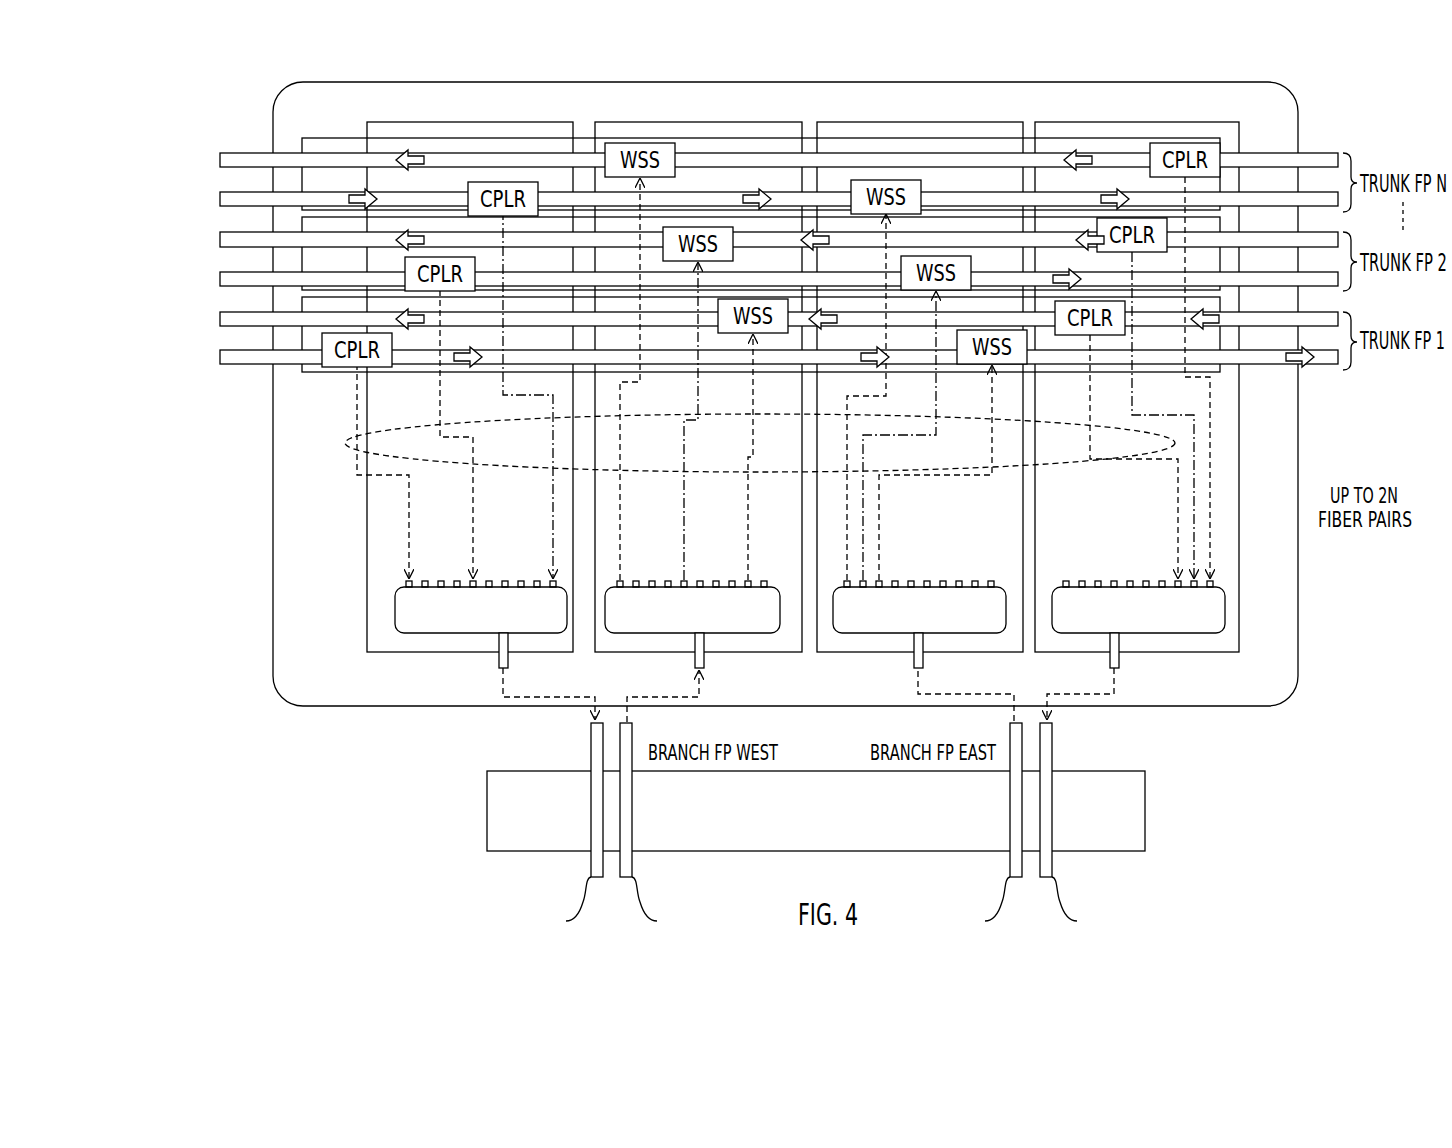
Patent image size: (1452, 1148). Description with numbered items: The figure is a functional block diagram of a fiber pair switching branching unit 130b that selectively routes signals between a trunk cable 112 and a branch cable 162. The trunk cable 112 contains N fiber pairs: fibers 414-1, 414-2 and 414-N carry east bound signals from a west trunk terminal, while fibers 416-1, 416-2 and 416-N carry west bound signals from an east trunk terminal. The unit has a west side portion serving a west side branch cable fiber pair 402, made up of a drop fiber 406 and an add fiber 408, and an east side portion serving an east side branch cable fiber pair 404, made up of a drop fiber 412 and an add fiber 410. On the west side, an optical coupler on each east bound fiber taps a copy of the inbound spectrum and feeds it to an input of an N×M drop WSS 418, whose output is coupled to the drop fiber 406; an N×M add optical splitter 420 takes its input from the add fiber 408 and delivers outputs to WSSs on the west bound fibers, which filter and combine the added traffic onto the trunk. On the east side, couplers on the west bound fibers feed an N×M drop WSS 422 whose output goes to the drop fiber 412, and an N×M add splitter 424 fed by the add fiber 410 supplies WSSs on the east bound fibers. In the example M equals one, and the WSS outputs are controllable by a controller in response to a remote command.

The trunk cable 112 is at (238, 124).
The branching unit 130b is at (280, 698).
The trunk fiber 416-N is at (218, 159).
The trunk fiber 414-N is at (218, 199).
The trunk fiber 416-2 is at (218, 239).
The trunk fiber 414-2 is at (218, 279).
The trunk fiber 416-1 is at (218, 319).
The trunk fiber 414-1 is at (218, 357).
The N×M drop WSS 418 is at (392, 608).
The N×M add optical splitter/coupler 420 is at (720, 638).
The N×M add optical splitter/coupler 424 is at (890, 638).
The N×M drop WSS 422 is at (1232, 628).
The branch cable 162 is at (1149, 815).
The west side branch cable fiber pair 402 is at (565, 829).
The east side branch cable fiber pair 404 is at (1087, 829).
The drop fiber 406 is at (567, 829).
The add fiber 408 is at (657, 829).
The add fiber 410 is at (987, 829).
The drop fiber 412 is at (1076, 829).